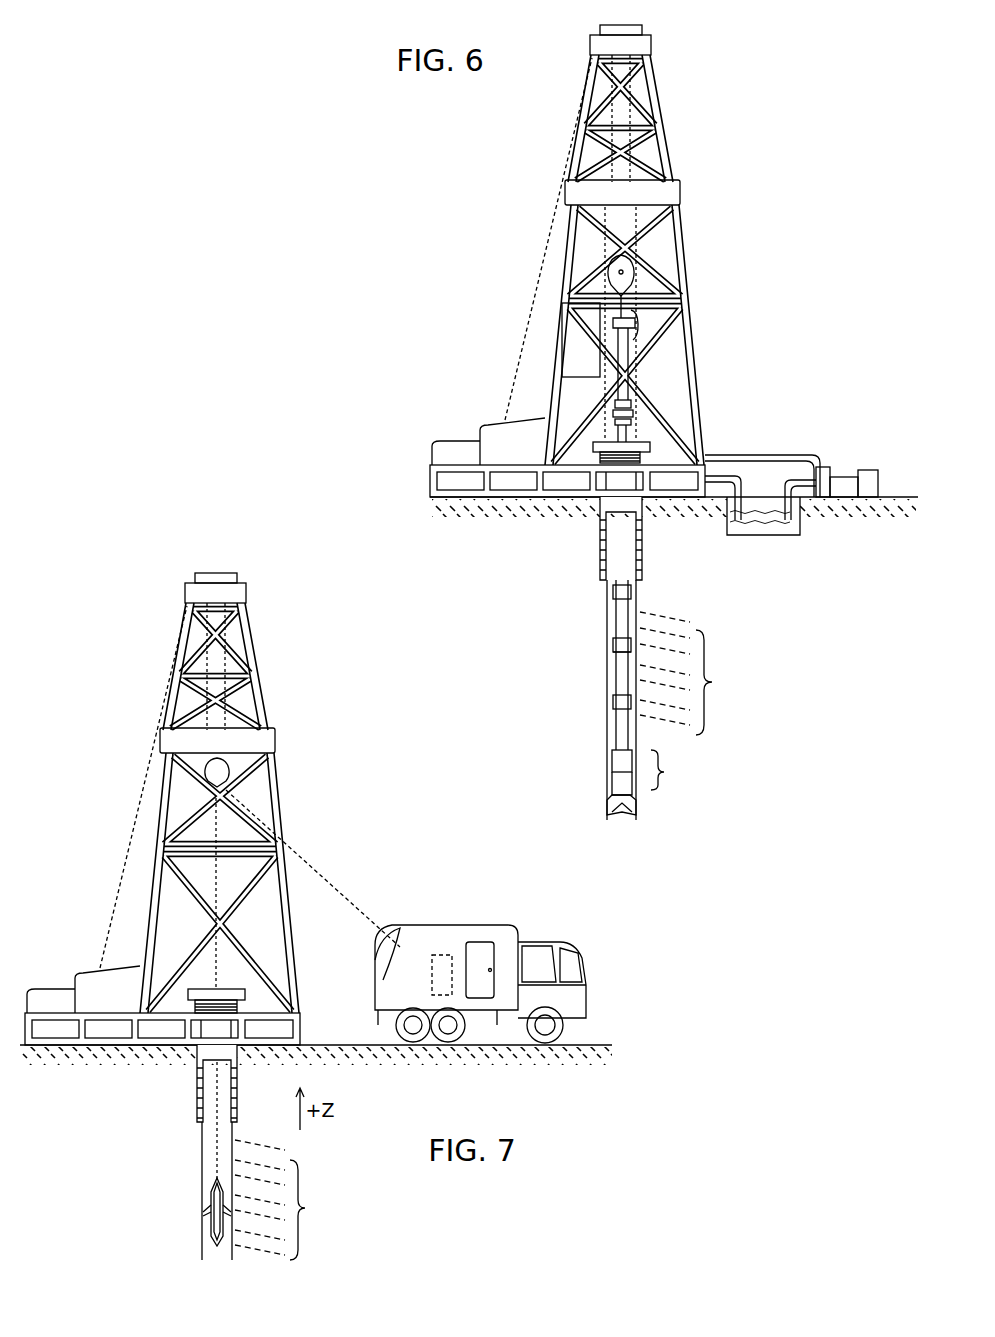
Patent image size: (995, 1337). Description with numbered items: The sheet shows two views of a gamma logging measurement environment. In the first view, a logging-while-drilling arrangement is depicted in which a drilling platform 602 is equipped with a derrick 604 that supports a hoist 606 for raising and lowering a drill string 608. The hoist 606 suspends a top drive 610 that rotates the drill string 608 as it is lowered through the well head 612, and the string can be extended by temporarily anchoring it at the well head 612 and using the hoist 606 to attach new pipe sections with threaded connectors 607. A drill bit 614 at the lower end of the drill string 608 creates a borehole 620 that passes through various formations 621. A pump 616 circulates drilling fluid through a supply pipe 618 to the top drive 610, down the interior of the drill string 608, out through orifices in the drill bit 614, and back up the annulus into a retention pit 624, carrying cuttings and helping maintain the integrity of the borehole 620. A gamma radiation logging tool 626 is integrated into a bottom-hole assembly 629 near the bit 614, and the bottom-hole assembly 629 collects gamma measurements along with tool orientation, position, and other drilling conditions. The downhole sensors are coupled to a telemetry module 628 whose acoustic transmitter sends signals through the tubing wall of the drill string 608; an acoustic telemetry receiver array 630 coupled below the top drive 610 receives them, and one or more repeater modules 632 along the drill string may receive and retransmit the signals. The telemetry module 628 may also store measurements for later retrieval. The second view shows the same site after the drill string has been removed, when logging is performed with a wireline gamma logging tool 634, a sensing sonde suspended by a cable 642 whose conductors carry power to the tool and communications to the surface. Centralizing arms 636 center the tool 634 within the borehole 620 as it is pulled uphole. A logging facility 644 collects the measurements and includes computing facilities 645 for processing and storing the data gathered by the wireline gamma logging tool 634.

In FIG. 6, the drilling platform 602 is at (430, 476).
In FIG. 7, the drilling platform 602 is at (302, 1012).
In FIG. 6, the derrick 604 is at (670, 158).
In FIG. 7, the derrick 604 is at (290, 980).
In FIG. 6, the hoist 606 is at (630, 262).
In FIG. 7, the hoist 606 is at (228, 770).
In FIG. 6, the threaded connectors 607 is at (605, 595).
In FIG. 6, the drill string 608 is at (636, 622).
In FIG. 6, the top drive 610 is at (636, 330).
In FIG. 6, the well head 612 is at (637, 440).
In FIG. 7, the well head 612 is at (248, 986).
In FIG. 6, the drill bit 614 is at (640, 810).
In FIG. 6, the pump 616 is at (834, 472).
In FIG. 6, the supply pipe 618 is at (778, 456).
In FIG. 6, the borehole 620 is at (613, 642).
In FIG. 7, the borehole 620 is at (201, 1156).
In FIG. 6, the formations 621 is at (700, 673).
In FIG. 7, the formations 621 is at (296, 1200).
In FIG. 6, the retention pit 624 is at (733, 537).
In FIG. 6, the gamma radiation logging tool 626 is at (611, 782).
In FIG. 6, the telemetry module 628 is at (611, 760).
In FIG. 6, the bottom-hole assembly 629 is at (684, 770).
In FIG. 6, the acoustic telemetry receiver array 630 is at (632, 400).
In FIG. 6, the repeater modules 632 is at (612, 652).
In FIG. 7, the wireline gamma logging tool 634 is at (210, 1200).
In FIG. 7, the centralizing arms 636 is at (206, 1217).
In FIG. 7, the cable 642 is at (300, 848).
In FIG. 7, the logging facility 644 is at (498, 926).
In FIG. 7, the computing facilities 645 is at (440, 953).